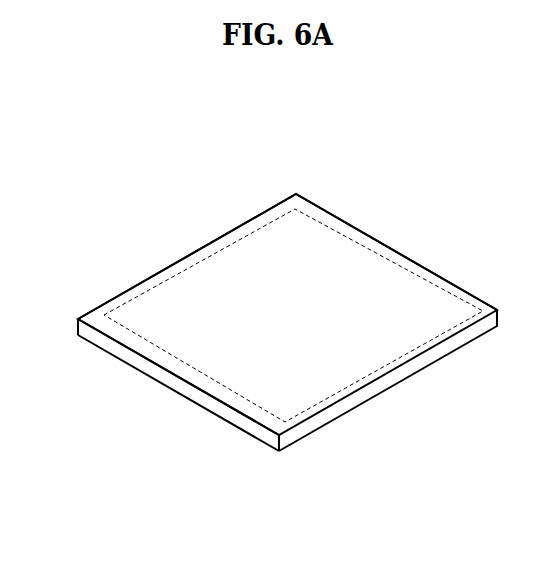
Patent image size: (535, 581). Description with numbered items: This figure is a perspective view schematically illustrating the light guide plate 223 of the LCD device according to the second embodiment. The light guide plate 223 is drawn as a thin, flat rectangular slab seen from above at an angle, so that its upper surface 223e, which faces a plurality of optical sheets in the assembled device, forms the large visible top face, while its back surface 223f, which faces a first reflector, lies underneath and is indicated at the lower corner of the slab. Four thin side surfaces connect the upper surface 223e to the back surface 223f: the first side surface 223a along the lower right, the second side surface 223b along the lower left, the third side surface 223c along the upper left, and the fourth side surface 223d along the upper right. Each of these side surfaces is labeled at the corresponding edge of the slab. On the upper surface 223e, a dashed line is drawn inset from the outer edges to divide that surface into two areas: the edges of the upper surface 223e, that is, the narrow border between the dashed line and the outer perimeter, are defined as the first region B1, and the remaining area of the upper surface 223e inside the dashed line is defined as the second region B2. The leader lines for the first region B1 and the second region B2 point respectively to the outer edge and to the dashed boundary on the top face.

The light guide plate 223 is at (309, 142).
The first side surface 223a is at (407, 378).
The second side surface 223b is at (197, 404).
The third side surface 223c is at (188, 257).
The fourth side surface 223d is at (395, 249).
The upper surface 223e is at (87, 427).
The back surface 223f is at (302, 442).
The first region B1 is at (108, 334).
The second region B2 is at (158, 336).